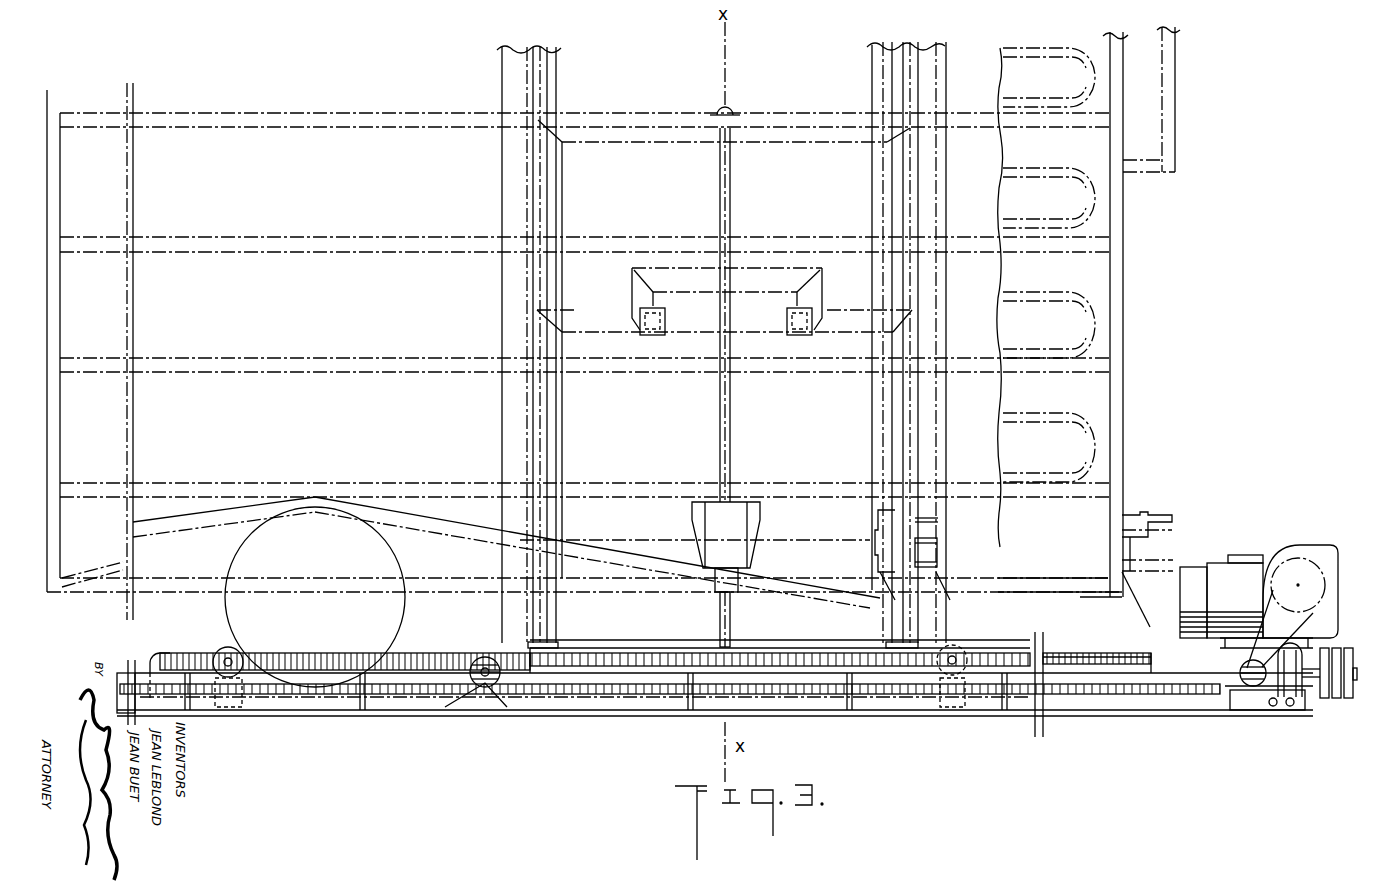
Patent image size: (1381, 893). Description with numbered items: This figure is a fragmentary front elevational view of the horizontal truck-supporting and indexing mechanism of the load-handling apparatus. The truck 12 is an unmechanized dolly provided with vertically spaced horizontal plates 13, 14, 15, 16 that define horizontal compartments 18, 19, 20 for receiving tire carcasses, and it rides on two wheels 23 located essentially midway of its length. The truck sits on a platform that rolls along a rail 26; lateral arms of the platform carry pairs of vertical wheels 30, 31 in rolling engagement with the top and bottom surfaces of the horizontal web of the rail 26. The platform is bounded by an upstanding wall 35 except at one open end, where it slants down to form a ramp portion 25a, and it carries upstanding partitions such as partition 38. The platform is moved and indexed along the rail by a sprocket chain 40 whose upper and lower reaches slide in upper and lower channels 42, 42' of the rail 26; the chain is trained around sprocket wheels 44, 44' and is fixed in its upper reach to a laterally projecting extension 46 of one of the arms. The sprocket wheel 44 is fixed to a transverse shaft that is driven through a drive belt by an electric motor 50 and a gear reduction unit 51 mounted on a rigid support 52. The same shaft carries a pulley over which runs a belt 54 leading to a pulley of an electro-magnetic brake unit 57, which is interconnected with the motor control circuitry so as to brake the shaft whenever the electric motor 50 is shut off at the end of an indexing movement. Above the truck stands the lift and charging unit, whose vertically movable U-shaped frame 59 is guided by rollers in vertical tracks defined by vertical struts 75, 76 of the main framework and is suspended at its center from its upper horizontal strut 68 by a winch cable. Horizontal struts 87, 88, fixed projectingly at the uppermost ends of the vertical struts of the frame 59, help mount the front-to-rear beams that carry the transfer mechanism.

The truck 12 is at (868, 190).
The horizontal plate 13 is at (456, 478).
The horizontal plate 14 is at (464, 333).
The horizontal plate 15 is at (462, 218).
The horizontal plate 16 is at (320, 118).
The horizontal compartment 18 is at (341, 429).
The horizontal compartment 19 is at (338, 314).
The horizontal compartment 20 is at (335, 199).
The wheel 23 is at (262, 609).
The ramp portion 25a is at (180, 655).
The rail 26 is at (424, 690).
The vertical wheel 30 is at (243, 651).
The vertical wheel 31 is at (254, 710).
The upstanding wall 35 is at (456, 660).
The partition 38 is at (410, 655).
The sprocket chain 40 is at (1160, 655).
The upper channel 42 is at (780, 640).
The lower channel 42' is at (670, 722).
The sprocket wheel 44 is at (1269, 719).
The sprocket wheel 44' is at (476, 703).
The extension 46 is at (932, 646).
The electric motor 50 is at (1216, 565).
The gear reduction unit 51 is at (1275, 560).
The rigid support 52 is at (1240, 670).
The belt 54 is at (1292, 698).
The electro-magnetic brake unit 57 is at (1326, 700).
The frame 59 is at (833, 98).
The upper horizontal strut 68 is at (668, 137).
The vertical strut 75 is at (896, 408).
The vertical strut 76 is at (548, 411).
The horizontal strut 87 is at (846, 318).
The horizontal strut 88 is at (596, 318).